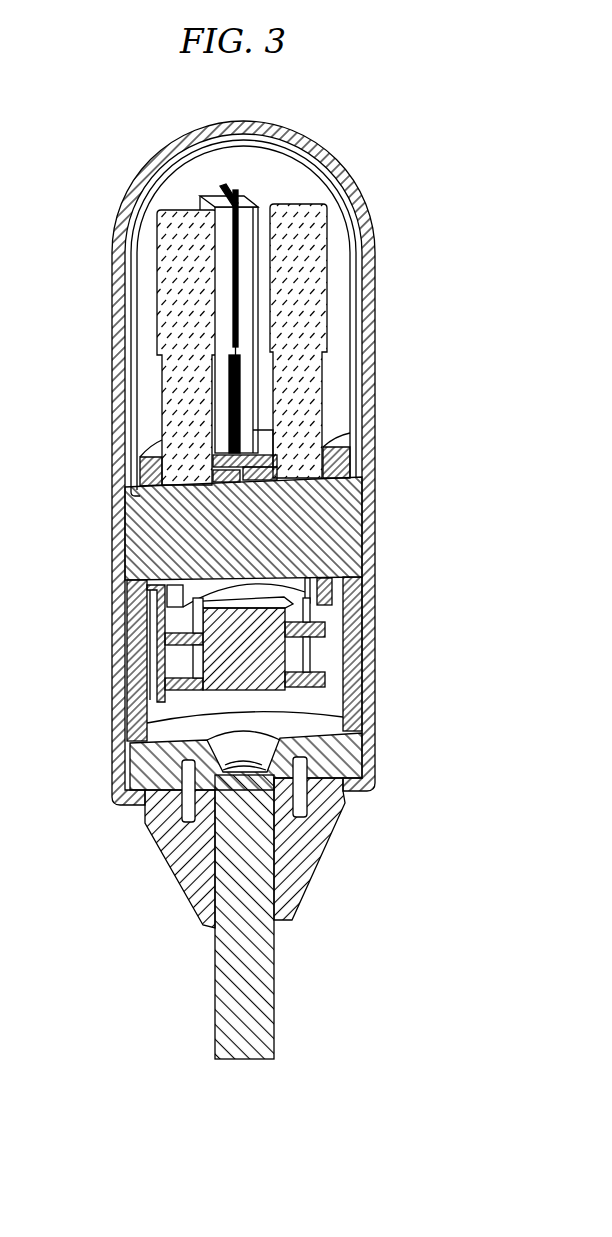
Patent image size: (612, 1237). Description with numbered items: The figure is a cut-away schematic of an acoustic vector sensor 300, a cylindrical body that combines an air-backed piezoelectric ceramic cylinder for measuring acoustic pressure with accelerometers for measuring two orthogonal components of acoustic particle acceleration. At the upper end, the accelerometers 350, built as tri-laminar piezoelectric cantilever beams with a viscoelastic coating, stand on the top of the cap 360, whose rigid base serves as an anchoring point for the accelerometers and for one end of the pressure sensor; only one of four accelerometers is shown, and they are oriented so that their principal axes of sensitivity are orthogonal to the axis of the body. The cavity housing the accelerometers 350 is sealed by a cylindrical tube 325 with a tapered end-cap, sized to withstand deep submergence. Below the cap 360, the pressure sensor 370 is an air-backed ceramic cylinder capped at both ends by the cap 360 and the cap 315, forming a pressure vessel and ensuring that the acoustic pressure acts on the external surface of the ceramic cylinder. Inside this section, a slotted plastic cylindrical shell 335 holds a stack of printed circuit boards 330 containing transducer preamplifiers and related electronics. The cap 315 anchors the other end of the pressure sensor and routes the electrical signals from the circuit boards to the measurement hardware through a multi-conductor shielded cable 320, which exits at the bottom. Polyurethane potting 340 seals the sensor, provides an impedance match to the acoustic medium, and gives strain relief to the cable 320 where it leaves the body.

The acoustic vector sensor 300 is at (394, 159).
The cylindrical tube 325 is at (217, 170).
The accelerometers 350 is at (238, 285).
The cap 360 is at (325, 522).
The pressure sensor 370 is at (357, 655).
The slotted plastic cylindrical shell 335 is at (160, 616).
The printed circuit boards 330 is at (230, 640).
The cap 315 is at (330, 768).
The polyurethane potting 340 is at (113, 797).
The multi-conductor shielded cable 320 is at (233, 1008).